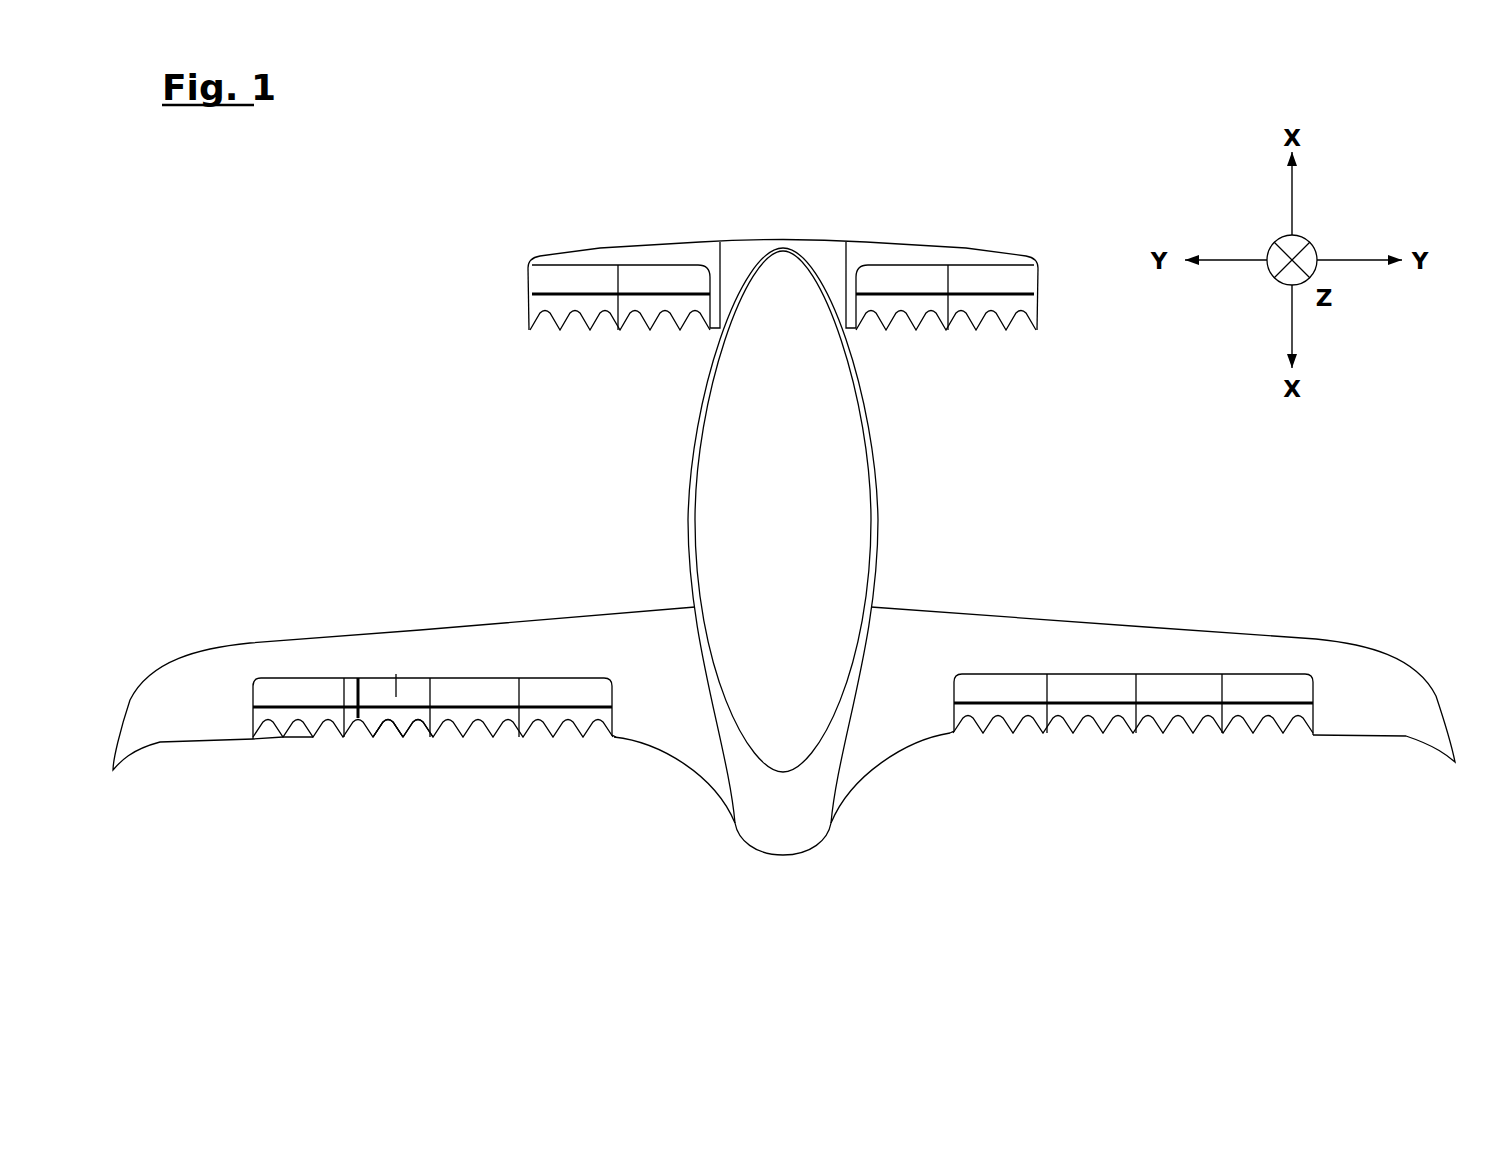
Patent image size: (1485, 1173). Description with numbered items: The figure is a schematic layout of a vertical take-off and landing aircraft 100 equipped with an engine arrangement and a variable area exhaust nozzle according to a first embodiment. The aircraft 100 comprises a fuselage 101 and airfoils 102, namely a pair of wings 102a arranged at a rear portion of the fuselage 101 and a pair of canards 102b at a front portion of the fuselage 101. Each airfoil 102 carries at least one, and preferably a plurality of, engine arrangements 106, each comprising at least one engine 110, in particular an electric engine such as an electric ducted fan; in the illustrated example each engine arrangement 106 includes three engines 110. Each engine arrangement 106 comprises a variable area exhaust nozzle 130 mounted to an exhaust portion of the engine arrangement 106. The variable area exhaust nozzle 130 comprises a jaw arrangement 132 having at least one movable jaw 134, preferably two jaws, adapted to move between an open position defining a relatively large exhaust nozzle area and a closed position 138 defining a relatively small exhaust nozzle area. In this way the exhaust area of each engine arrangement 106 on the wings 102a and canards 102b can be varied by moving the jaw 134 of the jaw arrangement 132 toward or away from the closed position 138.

The vertical take-off and landing aircraft 100 is at (420, 368).
The fuselage 101 is at (848, 433).
The airfoil 102 is at (784, 545).
The wing 102a is at (784, 794).
The canard 102b is at (782, 213).
The engine arrangement 106 is at (395, 748).
The engine 110 is at (385, 736).
The variable area exhaust nozzle 130 is at (415, 700).
The jaw arrangement 132 is at (405, 720).
The jaw 134 is at (380, 717).
The closed position 138 is at (303, 750).